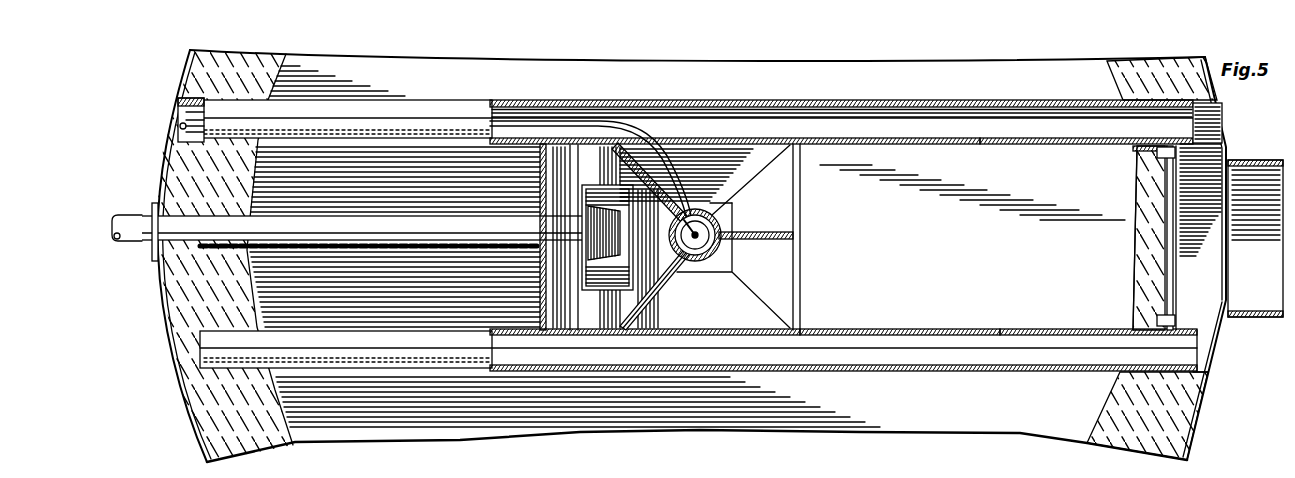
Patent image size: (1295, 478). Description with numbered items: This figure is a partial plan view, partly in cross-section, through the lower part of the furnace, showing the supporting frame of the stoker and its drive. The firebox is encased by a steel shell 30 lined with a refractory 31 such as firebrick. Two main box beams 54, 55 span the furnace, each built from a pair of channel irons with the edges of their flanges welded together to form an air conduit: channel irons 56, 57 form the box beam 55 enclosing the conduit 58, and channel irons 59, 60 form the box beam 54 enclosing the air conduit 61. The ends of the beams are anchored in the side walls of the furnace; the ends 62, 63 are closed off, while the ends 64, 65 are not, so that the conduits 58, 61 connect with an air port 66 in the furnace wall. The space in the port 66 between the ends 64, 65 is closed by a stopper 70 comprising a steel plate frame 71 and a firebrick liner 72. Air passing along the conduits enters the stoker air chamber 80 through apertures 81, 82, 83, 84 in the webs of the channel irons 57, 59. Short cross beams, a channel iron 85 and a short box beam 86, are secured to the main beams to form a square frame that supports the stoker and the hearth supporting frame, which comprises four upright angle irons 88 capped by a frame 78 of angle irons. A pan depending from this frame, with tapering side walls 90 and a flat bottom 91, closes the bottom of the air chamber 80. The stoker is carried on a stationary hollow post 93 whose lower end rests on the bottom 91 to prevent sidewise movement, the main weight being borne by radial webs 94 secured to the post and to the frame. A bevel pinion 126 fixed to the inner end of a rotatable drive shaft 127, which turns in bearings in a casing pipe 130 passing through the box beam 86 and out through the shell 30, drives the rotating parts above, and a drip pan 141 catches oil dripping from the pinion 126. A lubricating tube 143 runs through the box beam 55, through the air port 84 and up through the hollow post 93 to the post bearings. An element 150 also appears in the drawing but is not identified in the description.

The steel shell 30 is at (161, 300).
The refractory lining 31 is at (182, 315).
The box beam 54 is at (350, 328).
The box beam 55 is at (443, 98).
The channel iron 56 is at (973, 86).
The channel iron 57 is at (930, 143).
The air conduit 58 is at (1018, 130).
The channel iron 59 is at (972, 334).
The channel iron 60 is at (946, 374).
The air conduit 61 is at (1063, 334).
The closed end of box beam 62 is at (178, 106).
The closed end of box beam 63 is at (198, 352).
The open end of box beam 64 is at (1222, 112).
The open end of box beam 65 is at (1193, 357).
The air port 66 is at (1222, 170).
The stopper 70 is at (1127, 185).
The steel plate frame 71 is at (1165, 223).
The firebrick liner 72 is at (1148, 252).
The frame of angle irons 78 is at (683, 472).
The stoker air chamber 80 is at (715, 300).
The aperture 81 is at (640, 327).
The aperture 82 is at (750, 332).
The aperture 83 is at (743, 138).
The aperture 84 is at (669, 135).
The channel iron 85 is at (800, 240).
The short box beam 86 is at (540, 271).
The upright angle irons 88 is at (700, 472).
The tapering side walls 90 is at (780, 300).
The flat bottom 91 is at (725, 260).
The stationary hollow post 93 is at (723, 207).
The radial webs 94 is at (760, 234).
The bevel pinion 126 is at (592, 205).
The drive shaft 127 is at (130, 211).
The casing pipe 130 is at (371, 232).
The drip pan 141 is at (607, 237).
The tube 143 is at (612, 120).
The upper interior chamber 150 is at (366, 212).